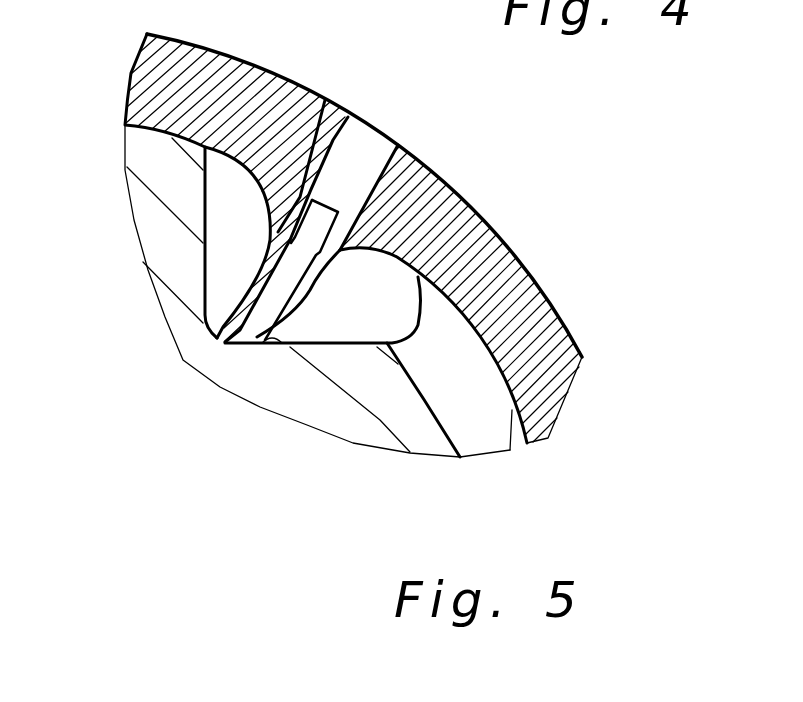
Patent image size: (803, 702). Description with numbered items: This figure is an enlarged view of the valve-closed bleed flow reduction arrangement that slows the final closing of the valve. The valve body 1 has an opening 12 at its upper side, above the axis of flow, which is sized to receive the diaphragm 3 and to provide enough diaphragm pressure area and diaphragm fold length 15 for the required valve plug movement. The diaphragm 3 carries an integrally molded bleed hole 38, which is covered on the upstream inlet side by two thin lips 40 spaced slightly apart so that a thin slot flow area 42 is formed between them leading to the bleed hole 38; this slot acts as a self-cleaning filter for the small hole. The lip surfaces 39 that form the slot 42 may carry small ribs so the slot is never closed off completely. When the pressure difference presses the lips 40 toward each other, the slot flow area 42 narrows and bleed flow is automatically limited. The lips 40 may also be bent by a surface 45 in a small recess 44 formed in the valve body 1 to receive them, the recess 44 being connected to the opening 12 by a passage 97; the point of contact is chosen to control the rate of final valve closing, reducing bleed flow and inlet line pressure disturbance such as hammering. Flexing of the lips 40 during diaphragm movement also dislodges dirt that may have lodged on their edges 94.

The valve body 1 is at (350, 447).
The diaphragm 3 is at (492, 216).
The opening 12 is at (527, 443).
The diaphragm fold length 15 is at (276, 108).
The bleed hole 38 is at (362, 152).
The lip surfaces 39 is at (263, 297).
The lips 40 is at (270, 275).
The thin slot flow area 42 is at (290, 262).
The recess 44 is at (260, 236).
The surface 45 is at (290, 347).
The edges 94 is at (212, 338).
The passage 97 is at (460, 385).